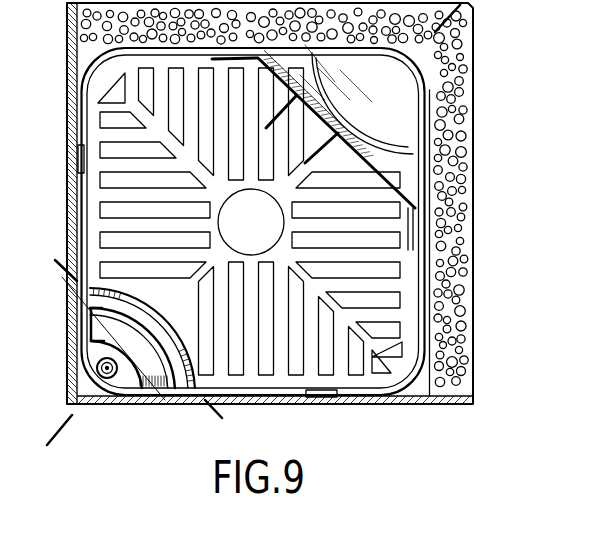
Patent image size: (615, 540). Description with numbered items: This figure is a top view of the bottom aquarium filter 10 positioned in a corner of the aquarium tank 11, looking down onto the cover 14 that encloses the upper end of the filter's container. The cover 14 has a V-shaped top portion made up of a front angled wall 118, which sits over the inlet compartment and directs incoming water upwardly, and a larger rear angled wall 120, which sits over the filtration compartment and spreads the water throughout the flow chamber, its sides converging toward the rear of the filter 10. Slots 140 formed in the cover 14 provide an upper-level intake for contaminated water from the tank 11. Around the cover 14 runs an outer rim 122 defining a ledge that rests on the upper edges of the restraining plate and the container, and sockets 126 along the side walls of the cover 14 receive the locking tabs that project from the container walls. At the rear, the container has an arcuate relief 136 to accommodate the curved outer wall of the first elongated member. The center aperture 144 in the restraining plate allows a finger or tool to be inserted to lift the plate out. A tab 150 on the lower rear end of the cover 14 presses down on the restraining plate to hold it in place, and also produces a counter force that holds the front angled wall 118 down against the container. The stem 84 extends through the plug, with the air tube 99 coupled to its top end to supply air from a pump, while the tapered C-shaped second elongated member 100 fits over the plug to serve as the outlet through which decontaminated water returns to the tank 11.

The bottom aquarium filter 10 is at (68, 272).
The aquarium tank 11 is at (70, 33).
The cover 14 is at (430, 107).
The stem 84 is at (99, 376).
The air tube 99 is at (118, 397).
The second elongated member 100 is at (143, 397).
The front angled wall 118 is at (400, 130).
The rear angled wall 120 is at (338, 372).
The outer rim 122 is at (236, 203).
The sockets 126 is at (78, 142).
The arcuate relief 136 is at (160, 308).
The slots 140 is at (290, 95).
The center aperture 144 is at (224, 225).
The tab 150 is at (132, 347).